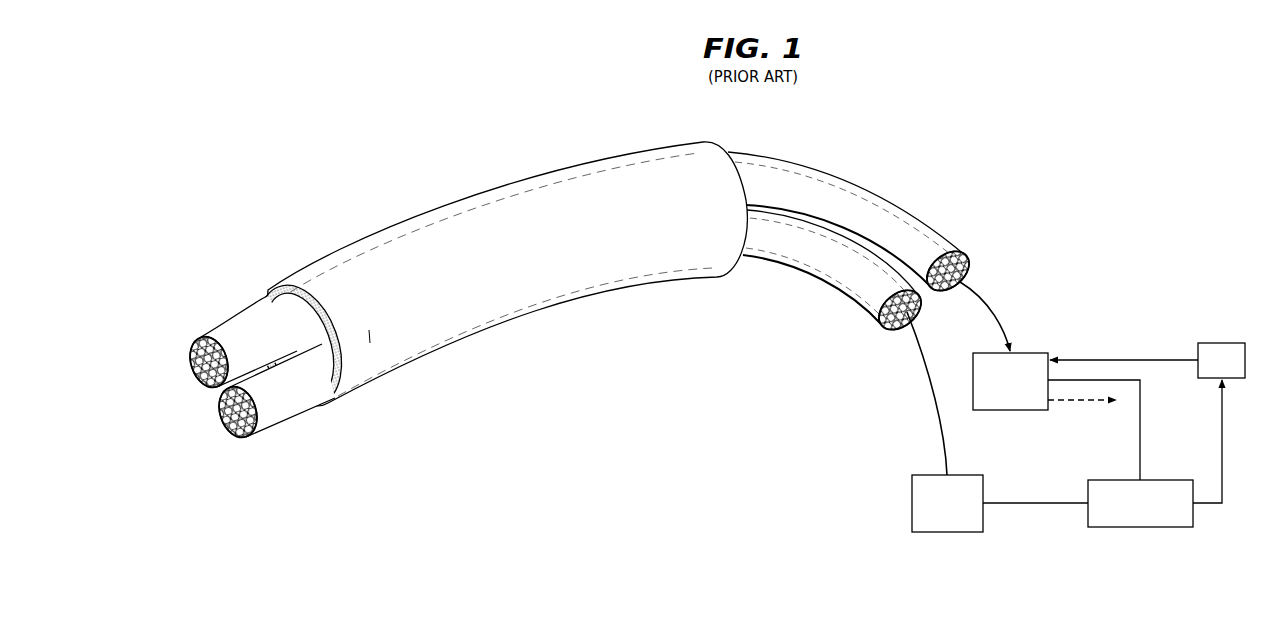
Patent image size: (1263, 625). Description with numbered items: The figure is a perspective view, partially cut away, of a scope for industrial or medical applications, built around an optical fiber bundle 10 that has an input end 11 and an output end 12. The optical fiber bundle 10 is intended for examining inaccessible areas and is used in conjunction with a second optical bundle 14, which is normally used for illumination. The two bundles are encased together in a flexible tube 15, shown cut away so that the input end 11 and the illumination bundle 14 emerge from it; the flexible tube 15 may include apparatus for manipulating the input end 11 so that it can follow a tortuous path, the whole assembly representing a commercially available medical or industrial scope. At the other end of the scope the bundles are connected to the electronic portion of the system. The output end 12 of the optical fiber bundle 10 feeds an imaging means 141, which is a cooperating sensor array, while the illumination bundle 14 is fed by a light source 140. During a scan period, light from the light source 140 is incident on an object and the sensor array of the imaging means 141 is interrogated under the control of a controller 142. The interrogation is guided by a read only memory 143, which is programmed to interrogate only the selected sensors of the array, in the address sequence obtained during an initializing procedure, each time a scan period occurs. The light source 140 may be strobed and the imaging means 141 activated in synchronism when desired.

The optical fiber bundle 10 is at (836, 274).
The input end 11 is at (190, 363).
The output end 12 is at (900, 208).
The second optical bundle 14 is at (283, 408).
The flexible tube 15 is at (413, 231).
The light source 140 is at (970, 475).
The imaging means 141 is at (1033, 353).
The controller 142 is at (1163, 480).
The read only memory 143 is at (1217, 343).